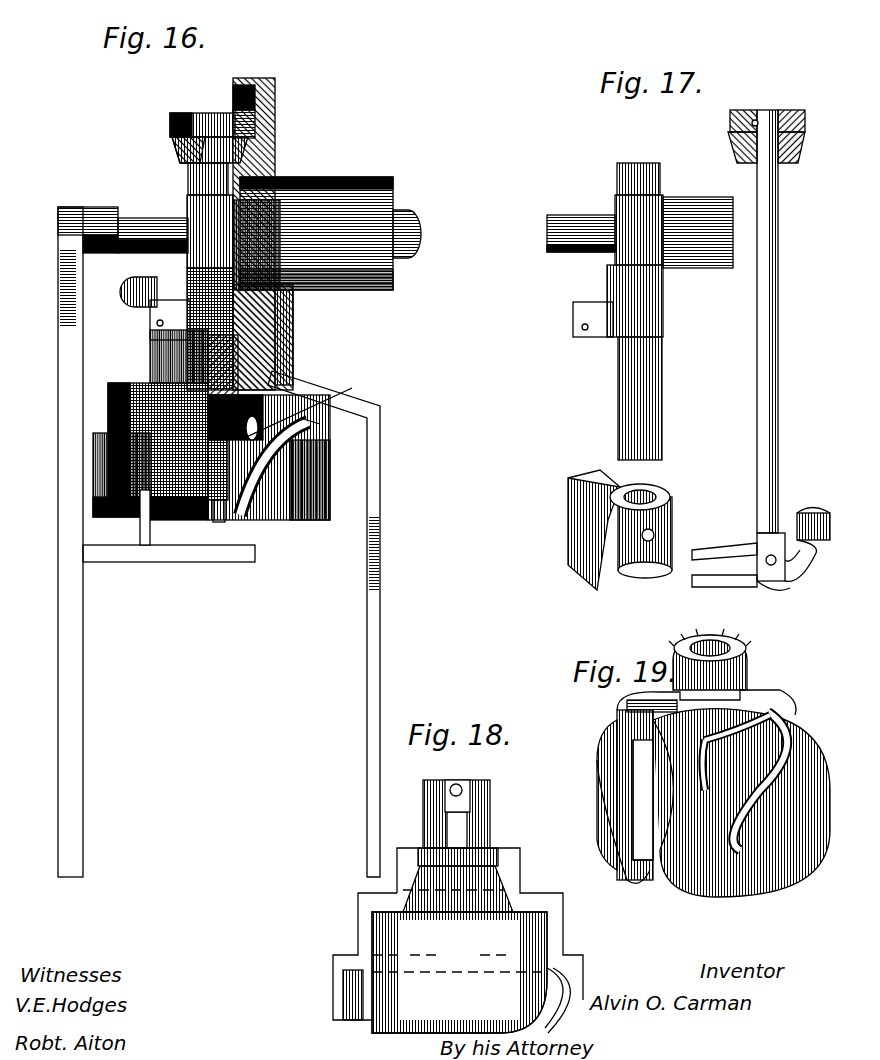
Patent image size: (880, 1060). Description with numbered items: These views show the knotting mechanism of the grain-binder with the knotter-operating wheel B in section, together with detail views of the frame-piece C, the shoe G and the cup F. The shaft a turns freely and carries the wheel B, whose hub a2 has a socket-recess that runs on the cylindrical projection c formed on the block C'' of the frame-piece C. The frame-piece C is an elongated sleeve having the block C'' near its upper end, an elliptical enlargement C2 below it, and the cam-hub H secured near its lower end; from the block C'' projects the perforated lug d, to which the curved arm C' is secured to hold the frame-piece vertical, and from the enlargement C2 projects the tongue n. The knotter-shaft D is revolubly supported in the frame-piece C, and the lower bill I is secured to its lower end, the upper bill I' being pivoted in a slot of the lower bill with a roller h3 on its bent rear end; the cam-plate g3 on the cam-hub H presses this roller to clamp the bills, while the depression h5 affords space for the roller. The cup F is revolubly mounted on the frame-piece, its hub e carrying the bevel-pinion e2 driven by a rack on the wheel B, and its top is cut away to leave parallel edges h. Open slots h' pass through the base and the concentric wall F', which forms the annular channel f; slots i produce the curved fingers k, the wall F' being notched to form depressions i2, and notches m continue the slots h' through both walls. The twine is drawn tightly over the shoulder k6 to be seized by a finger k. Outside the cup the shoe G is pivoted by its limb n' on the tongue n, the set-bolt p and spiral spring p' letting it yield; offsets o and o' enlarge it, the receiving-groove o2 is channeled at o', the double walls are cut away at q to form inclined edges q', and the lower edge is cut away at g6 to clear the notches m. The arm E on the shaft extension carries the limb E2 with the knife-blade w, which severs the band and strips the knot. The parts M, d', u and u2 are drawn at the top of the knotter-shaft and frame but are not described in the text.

In FIG. 16, the ejector-arm E is at (83, 645).
In FIG. 16, the limb E2 is at (205, 565).
In FIG. 16, the frame side bar M is at (380, 592).
In FIG. 16, the arm d' is at (153, 247).
In FIG. 16, the knotter-operating wheel B is at (275, 130).
In FIG. 16, the nut u2 is at (170, 125).
In FIG. 17, the nut u2 is at (805, 120).
In FIG. 16, the collar u is at (180, 160).
In FIG. 17, the collar u is at (798, 158).
In FIG. 16, the knotter-shaft D is at (188, 185).
In FIG. 17, the knotter-shaft D is at (778, 340).
In FIG. 16, the curved arm C' is at (197, 292).
In FIG. 16, the hub of the knotter-operating wheel a2 is at (393, 275).
In FIG. 16, the shaft a is at (420, 237).
In FIG. 16, the frame-piece C is at (311, 185).
In FIG. 17, the frame-piece C is at (654, 398).
In FIG. 17, the cylindrical projection c is at (690, 277).
In FIG. 16, the set-bolt p is at (122, 293).
In FIG. 16, the spiral spring p' is at (135, 320).
In FIG. 16, the upwardly-projecting limb n' is at (158, 322).
In FIG. 18, the upwardly-projecting limb n' is at (470, 814).
In FIG. 16, the tongue n is at (138, 351).
In FIG. 17, the tongue n is at (576, 319).
In FIG. 16, the shoe G is at (150, 370).
In FIG. 18, the shoe G is at (520, 935).
In FIG. 16, the offset o is at (99, 377).
In FIG. 18, the offset o is at (458, 934).
In FIG. 16, the offset o' is at (119, 464).
In FIG. 18, the offset o' is at (324, 943).
In FIG. 18, the receiving-groove o2 is at (343, 980).
In FIG. 16, the cut-away point g6 is at (100, 500).
In FIG. 18, the cut-away point g6 is at (340, 1030).
In FIG. 16, the notches m is at (138, 520).
In FIG. 19, the notches m is at (603, 860).
In FIG. 16, the knife-blade w is at (152, 532).
In FIG. 16, the open slots h' is at (221, 524).
In FIG. 19, the open slots h' is at (652, 887).
In FIG. 16, the concentric wall F' is at (269, 440).
In FIG. 19, the concentric wall F' is at (609, 801).
In FIG. 19, the cup F is at (648, 795).
In FIG. 19, the annular channel f is at (650, 830).
In FIG. 16, the fingers k is at (286, 464).
In FIG. 19, the fingers k is at (790, 722).
In FIG. 16, the shoulder k6 is at (305, 405).
In FIG. 16, the half-circular depression i2 is at (308, 458).
In FIG. 19, the half-circular depression i2 is at (740, 855).
In FIG. 16, the slots i is at (322, 478).
In FIG. 19, the slots i is at (669, 760).
In FIG. 17, the block C'' is at (655, 179).
In FIG. 17, the elliptical enlargement C2 is at (663, 310).
In FIG. 17, the perforated lug d is at (626, 232).
In FIG. 17, the cam-plate g3 is at (568, 548).
In FIG. 17, the cam-hub H is at (672, 520).
In FIG. 17, the depression h5 is at (630, 570).
In FIG. 17, the upper bill I' is at (724, 540).
In FIG. 17, the lower bill I is at (754, 574).
In FIG. 17, the anti-friction roller h3 is at (810, 513).
In FIG. 18, the cut-away point q is at (571, 992).
In FIG. 18, the inclined edges q' is at (547, 1035).
In FIG. 19, the bevel-pinion e2 is at (747, 655).
In FIG. 19, the perforated hub e is at (690, 685).
In FIG. 19, the parallel edges h is at (706, 703).